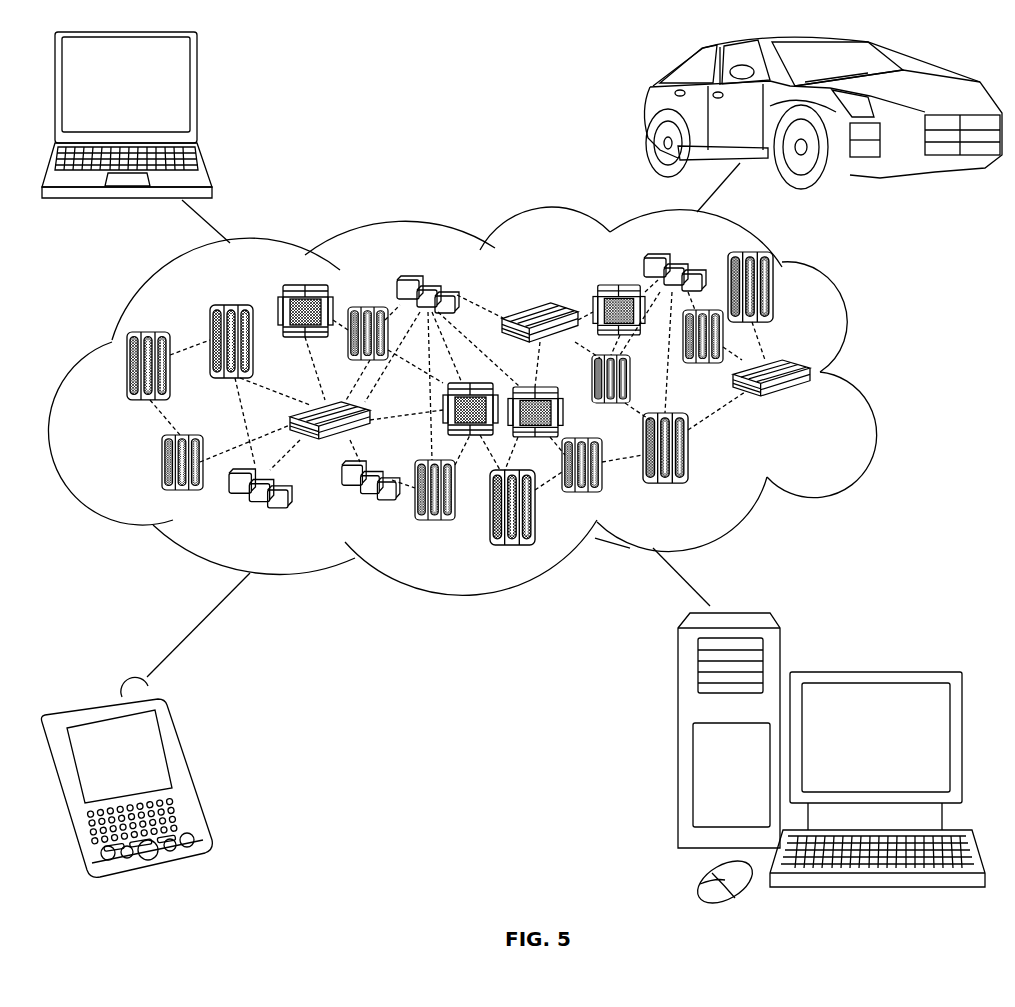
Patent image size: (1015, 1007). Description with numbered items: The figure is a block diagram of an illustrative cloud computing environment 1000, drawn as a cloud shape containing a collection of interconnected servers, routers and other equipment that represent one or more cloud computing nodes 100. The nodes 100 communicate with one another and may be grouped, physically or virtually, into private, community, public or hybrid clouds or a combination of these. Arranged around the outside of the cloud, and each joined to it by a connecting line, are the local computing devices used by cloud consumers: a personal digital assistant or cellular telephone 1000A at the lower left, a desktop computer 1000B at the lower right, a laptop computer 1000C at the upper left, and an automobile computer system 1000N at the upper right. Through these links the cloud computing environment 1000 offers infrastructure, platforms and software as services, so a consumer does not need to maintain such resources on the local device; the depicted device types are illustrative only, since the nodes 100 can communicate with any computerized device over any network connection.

The cloud computing nodes 100 is at (813, 407).
The cloud computing environment 1000 is at (872, 377).
The personal digital assistant (PDA) or cellular telephone 1000A is at (186, 770).
The desktop computer 1000B is at (873, 672).
The laptop computer 1000C is at (200, 95).
The automobile computer system 1000N is at (648, 110).